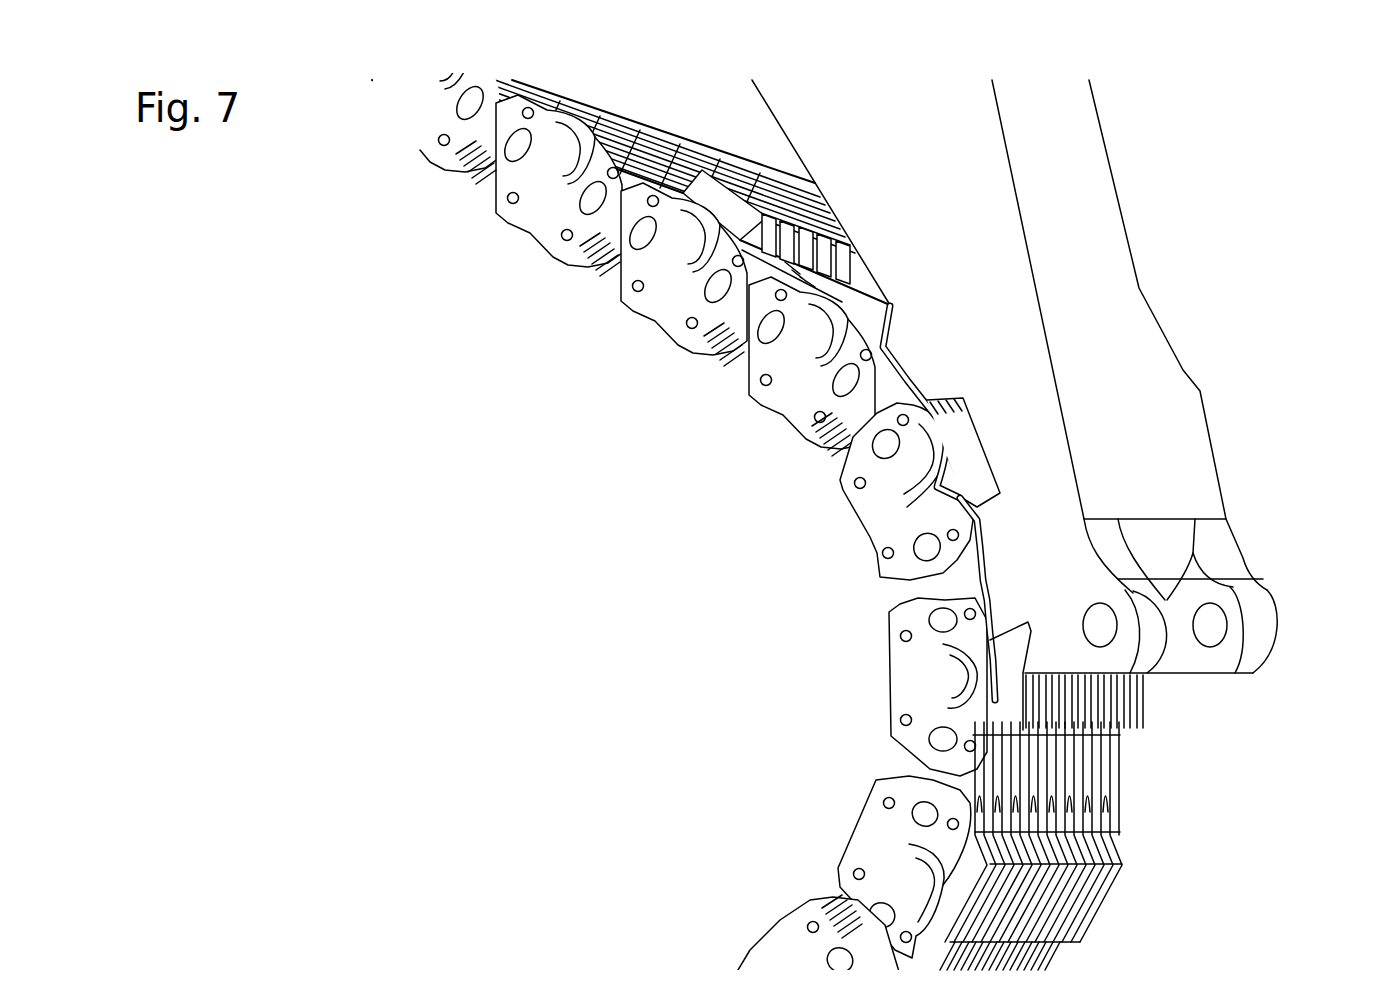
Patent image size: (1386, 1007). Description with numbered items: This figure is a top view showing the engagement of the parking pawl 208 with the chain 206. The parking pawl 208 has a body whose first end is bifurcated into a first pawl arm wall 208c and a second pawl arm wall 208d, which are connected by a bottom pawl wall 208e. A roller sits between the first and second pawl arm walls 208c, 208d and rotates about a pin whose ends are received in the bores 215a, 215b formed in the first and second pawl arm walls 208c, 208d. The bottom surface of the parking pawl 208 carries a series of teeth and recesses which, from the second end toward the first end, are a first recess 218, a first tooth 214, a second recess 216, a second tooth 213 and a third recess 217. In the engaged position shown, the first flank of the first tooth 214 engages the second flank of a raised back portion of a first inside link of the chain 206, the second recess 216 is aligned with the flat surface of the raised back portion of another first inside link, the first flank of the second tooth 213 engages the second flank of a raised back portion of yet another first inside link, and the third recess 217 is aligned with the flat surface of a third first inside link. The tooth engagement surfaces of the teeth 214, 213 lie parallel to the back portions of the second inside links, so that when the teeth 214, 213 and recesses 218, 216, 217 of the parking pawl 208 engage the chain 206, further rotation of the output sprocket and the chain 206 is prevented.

The chain 206 is at (863, 533).
The parking pawl 208 is at (1180, 476).
The first pawl arm wall 208c is at (1159, 731).
The second pawl arm wall 208d is at (1280, 606).
The bottom pawl wall 208e is at (1182, 633).
The second tooth 213 is at (987, 573).
The first tooth 214 is at (900, 366).
The bore 215a is at (1090, 640).
The bore 215b is at (1221, 604).
The second recess 216 is at (977, 446).
The third recess 217 is at (1020, 643).
The first recess 218 is at (857, 260).